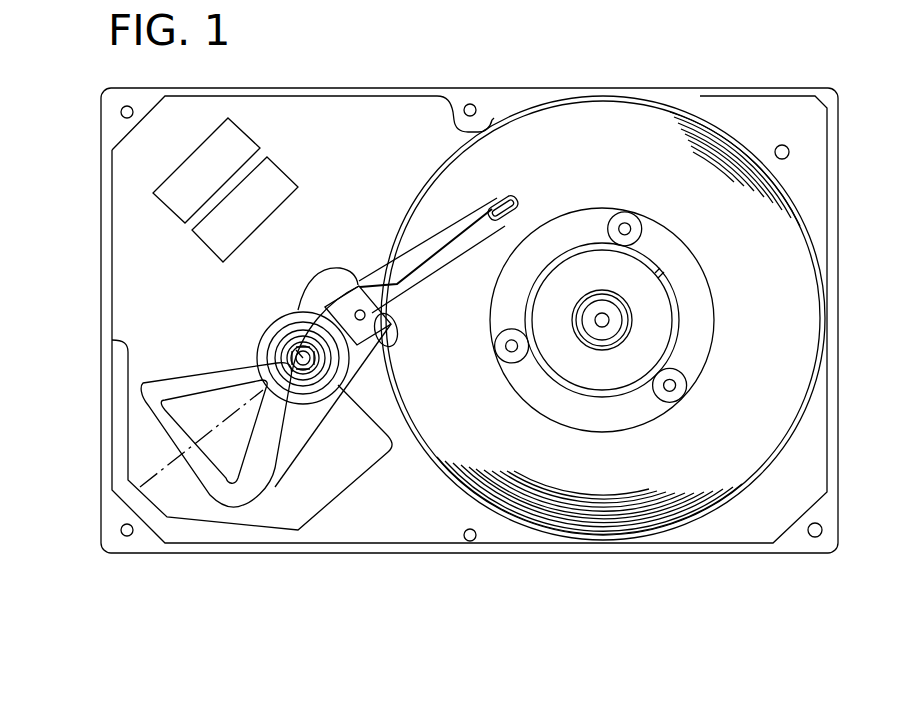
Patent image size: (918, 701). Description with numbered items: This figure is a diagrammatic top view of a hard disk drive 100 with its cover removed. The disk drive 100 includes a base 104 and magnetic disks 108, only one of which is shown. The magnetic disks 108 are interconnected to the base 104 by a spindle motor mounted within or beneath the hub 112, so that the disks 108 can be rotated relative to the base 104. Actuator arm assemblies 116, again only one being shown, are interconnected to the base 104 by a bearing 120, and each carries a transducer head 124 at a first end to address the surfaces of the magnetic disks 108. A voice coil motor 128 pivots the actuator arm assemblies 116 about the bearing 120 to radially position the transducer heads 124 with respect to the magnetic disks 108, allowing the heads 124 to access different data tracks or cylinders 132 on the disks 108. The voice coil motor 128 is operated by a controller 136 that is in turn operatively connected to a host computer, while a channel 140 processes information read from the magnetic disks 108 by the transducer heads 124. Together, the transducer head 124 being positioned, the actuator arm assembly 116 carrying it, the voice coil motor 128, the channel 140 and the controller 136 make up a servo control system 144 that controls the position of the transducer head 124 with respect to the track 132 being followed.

The disk drive 100 is at (705, 75).
The base 104 is at (410, 520).
The magnetic disk 108 is at (620, 505).
The hub 112 is at (608, 316).
The actuator arm assembly 116 is at (455, 222).
The bearing 120 is at (295, 350).
The transducer head 124 is at (500, 196).
The voice coil motor 128 is at (152, 401).
The data tracks 132 is at (592, 525).
The controller 136 is at (172, 204).
The channel 140 is at (210, 236).
The servo control system 144 is at (352, 237).